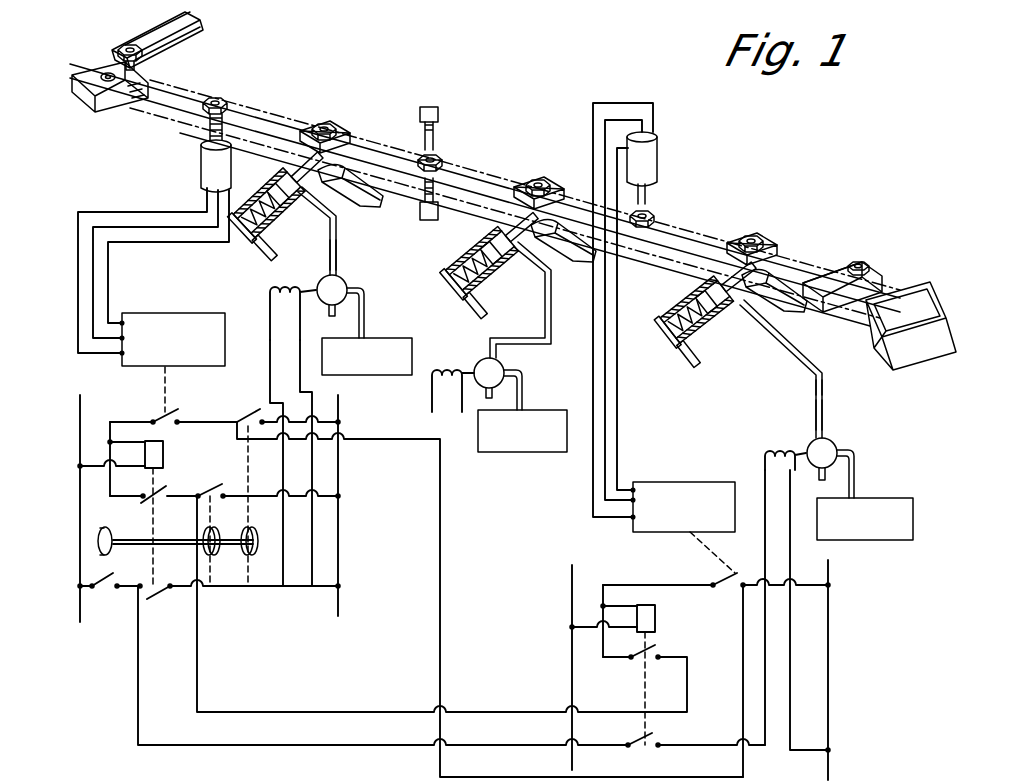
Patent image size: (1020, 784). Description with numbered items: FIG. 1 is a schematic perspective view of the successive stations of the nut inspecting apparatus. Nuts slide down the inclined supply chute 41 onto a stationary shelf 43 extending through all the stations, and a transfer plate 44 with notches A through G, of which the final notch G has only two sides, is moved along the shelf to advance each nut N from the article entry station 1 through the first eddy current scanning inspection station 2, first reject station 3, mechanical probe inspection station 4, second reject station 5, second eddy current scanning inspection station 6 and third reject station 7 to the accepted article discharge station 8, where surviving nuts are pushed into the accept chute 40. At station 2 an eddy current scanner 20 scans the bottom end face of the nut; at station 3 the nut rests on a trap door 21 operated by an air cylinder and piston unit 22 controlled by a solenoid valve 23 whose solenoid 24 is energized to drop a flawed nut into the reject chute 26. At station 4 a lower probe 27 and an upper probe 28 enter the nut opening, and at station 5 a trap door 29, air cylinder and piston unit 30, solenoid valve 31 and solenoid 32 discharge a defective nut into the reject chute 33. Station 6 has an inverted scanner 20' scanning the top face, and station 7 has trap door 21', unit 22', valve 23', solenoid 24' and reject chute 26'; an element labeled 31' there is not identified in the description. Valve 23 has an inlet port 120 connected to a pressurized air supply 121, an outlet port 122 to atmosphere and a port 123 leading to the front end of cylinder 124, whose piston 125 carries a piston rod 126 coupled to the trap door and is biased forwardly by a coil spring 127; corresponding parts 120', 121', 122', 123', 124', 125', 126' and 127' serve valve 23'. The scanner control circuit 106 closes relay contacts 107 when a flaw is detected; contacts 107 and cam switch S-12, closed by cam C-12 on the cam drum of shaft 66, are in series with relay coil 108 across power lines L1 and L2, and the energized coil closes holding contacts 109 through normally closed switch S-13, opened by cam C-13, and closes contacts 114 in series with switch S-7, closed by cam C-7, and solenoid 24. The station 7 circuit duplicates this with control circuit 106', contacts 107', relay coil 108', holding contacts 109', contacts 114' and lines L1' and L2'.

The article entry station 1 is at (158, 68).
The first eddy current scanning inspection station 2 is at (245, 95).
The first reject station 3 is at (332, 110).
The mechanical probe inspection station 4 is at (442, 150).
The second reject station 5 is at (537, 176).
The second eddy current scanning inspection station 6 is at (660, 214).
The third reject station 7 is at (748, 230).
The accepted article discharge station 8 is at (878, 262).
The eddy current scanner 20 is at (154, 233).
The eddy current scanner 20' is at (648, 310).
The reciprocable trap door 21 is at (337, 122).
The reciprocable trap door 21' is at (770, 238).
The air cylinder and piston unit 22 is at (280, 192).
The air cylinder and piston unit 22' is at (709, 301).
The solenoid valve 23 is at (343, 246).
The solenoid valve 23' is at (810, 384).
The solenoid 24 is at (275, 436).
The solenoid 24' is at (779, 586).
The reject chute 26 is at (350, 197).
The reject chute 26' is at (782, 310).
The lower probe 27 is at (436, 190).
The upper probe 28 is at (422, 134).
The reciprocable trap door 29 is at (550, 186).
The air cylinder and piston unit 30 is at (496, 270).
The solenoid valve 31 is at (516, 347).
The pipe connection 31' is at (798, 412).
The solenoid 32 is at (440, 368).
The reject chute 33 is at (562, 253).
The accept chute 40 is at (898, 352).
The supply chute 41 is at (198, 36).
The stationary shelf 43 is at (208, 96).
The transfer plate 44 is at (110, 100).
The shaft 66 is at (183, 528).
The control circuit 106 is at (172, 347).
The control circuit 106' is at (683, 510).
The relay contacts 107 is at (173, 412).
The relay contacts 107' is at (715, 675).
The relay coil 108 is at (137, 504).
The relay coil 108' is at (635, 665).
The holding contacts 109 is at (154, 498).
The holding contacts 109' is at (624, 678).
The relay contacts 114 is at (412, 620).
The relay contacts 114' is at (676, 735).
The inlet port 120 is at (378, 308).
The inlet port 120' is at (875, 473).
The pressurized air supply 121 is at (378, 336).
The pressurized air supply 121' is at (872, 509).
The outlet port 122 is at (327, 312).
The outlet port 122' is at (831, 482).
The cylinder port 123 is at (310, 261).
The cylinder port 123' is at (843, 419).
The cylinder 124 is at (237, 229).
The cylinder 124' is at (682, 288).
The piston 125 is at (259, 193).
The piston 125' is at (672, 311).
The piston rod 126 is at (302, 115).
The piston rod 126' is at (734, 227).
The coil spring 127 is at (253, 265).
The coil spring 127' is at (696, 361).
The notch A is at (102, 74).
The nut N is at (128, 46).
The final notch G is at (878, 270).
The power supply line L1 is at (74, 527).
The power supply line L1' is at (542, 667).
The power supply line L2 is at (359, 505).
The power supply line L2' is at (854, 670).
The cam-operated switch S-7 is at (100, 598).
The cam switch S-12 is at (243, 420).
The cam-operated switch S-13 is at (215, 492).
The cam C-7 is at (110, 552).
The cam C-12 is at (254, 556).
The cam C-13 is at (212, 556).